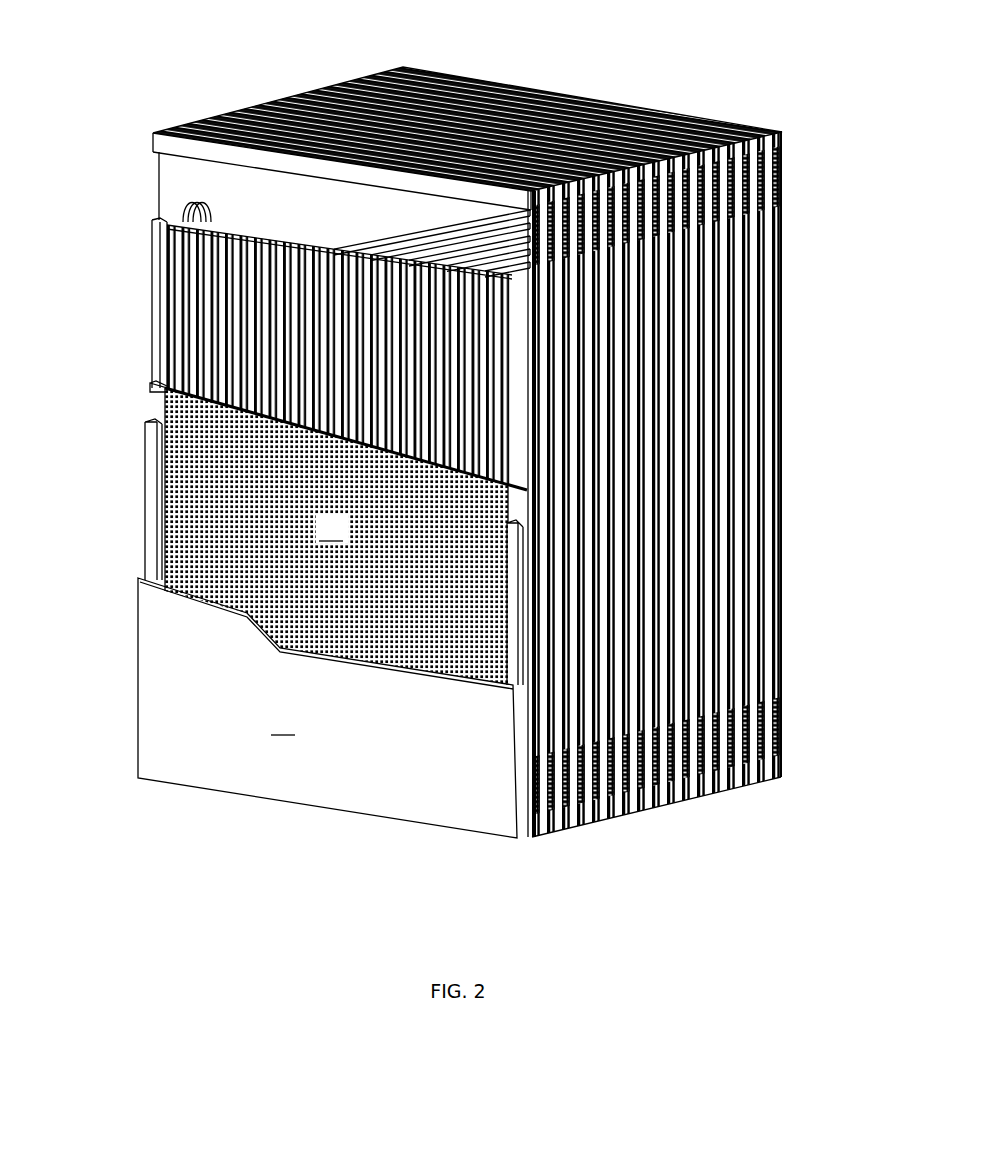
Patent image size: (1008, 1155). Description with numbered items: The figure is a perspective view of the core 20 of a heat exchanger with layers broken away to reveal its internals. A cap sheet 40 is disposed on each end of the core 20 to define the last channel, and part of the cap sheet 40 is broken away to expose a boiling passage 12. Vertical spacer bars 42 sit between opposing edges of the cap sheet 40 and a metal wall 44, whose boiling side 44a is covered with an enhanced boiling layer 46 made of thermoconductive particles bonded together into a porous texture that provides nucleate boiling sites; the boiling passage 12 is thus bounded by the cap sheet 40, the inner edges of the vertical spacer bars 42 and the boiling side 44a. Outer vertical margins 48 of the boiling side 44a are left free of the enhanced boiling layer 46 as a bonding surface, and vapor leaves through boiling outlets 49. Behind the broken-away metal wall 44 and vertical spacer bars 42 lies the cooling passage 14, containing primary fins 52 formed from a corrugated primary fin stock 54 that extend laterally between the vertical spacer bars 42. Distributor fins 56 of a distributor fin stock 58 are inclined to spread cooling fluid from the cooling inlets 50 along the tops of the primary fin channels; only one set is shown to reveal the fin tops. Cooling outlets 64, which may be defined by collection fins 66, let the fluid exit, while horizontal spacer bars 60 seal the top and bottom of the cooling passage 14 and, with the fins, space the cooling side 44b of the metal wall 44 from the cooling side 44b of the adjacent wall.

The boiling passage 12 is at (230, 130).
The cooling passage 14 is at (673, 157).
The core 20 is at (800, 363).
The cap sheet 40 is at (782, 595).
The vertical spacer bars 42 is at (163, 232).
The metal wall 44 is at (200, 480).
The boiling side 44a is at (232, 545).
The cooling side 44b is at (190, 180).
The enhanced boiling layer 46 is at (346, 536).
The outer vertical margins 48 is at (157, 398).
The boiling outlets 49 is at (585, 117).
The cooling inlets 50 is at (722, 220).
The primary fins 52 is at (187, 203).
The primary fin stock 54 is at (237, 341).
The distributor fins 56 is at (767, 187).
The distributor fin stock 58 is at (400, 250).
The horizontal spacer bars 60 is at (153, 136).
The cooling outlets 64 is at (748, 733).
The collection fins 66 is at (733, 770).